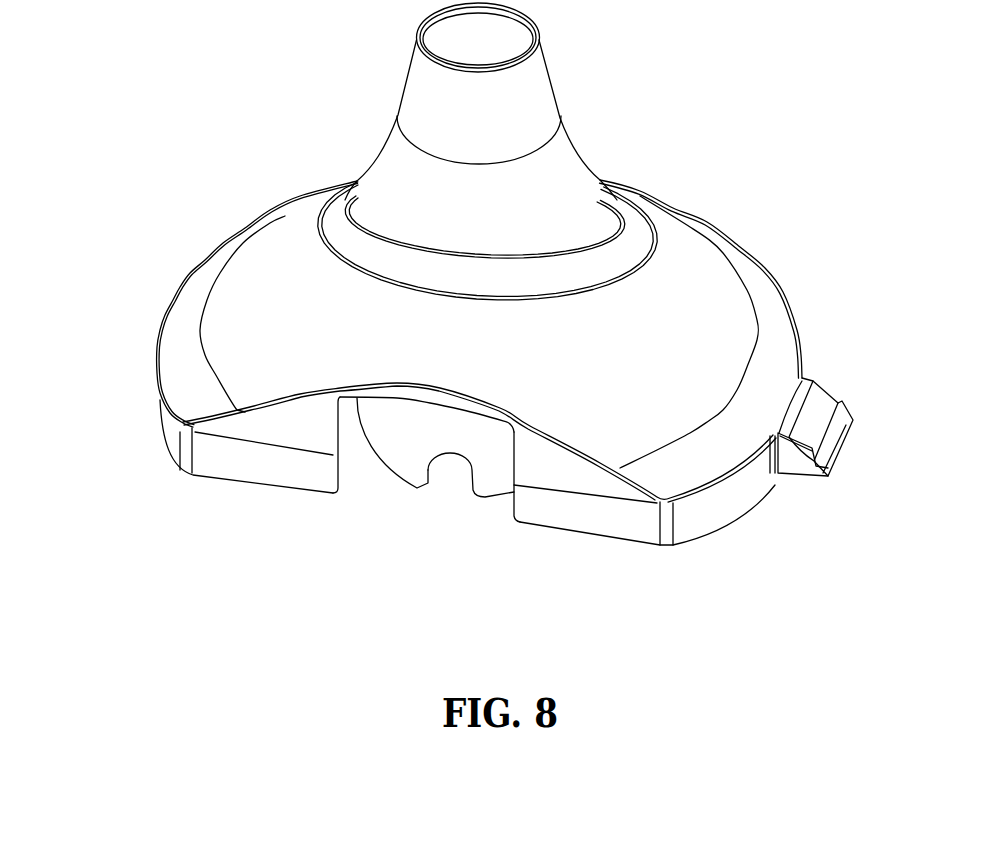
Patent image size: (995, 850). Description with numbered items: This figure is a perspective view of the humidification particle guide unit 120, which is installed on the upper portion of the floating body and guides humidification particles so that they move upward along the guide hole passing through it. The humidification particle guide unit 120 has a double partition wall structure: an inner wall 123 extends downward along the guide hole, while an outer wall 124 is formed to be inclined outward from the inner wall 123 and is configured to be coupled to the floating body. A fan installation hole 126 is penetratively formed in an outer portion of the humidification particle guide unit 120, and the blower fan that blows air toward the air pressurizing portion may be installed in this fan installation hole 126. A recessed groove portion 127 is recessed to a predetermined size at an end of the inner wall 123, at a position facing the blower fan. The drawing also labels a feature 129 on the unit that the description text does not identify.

The humidification particle guide unit 120 is at (557, 172).
The inner wall 123 is at (405, 448).
The outer wall 124 is at (270, 281).
The fan installation hole 126 is at (335, 471).
The recessed groove portion 127 is at (475, 480).
The annular flange 129 is at (625, 250).